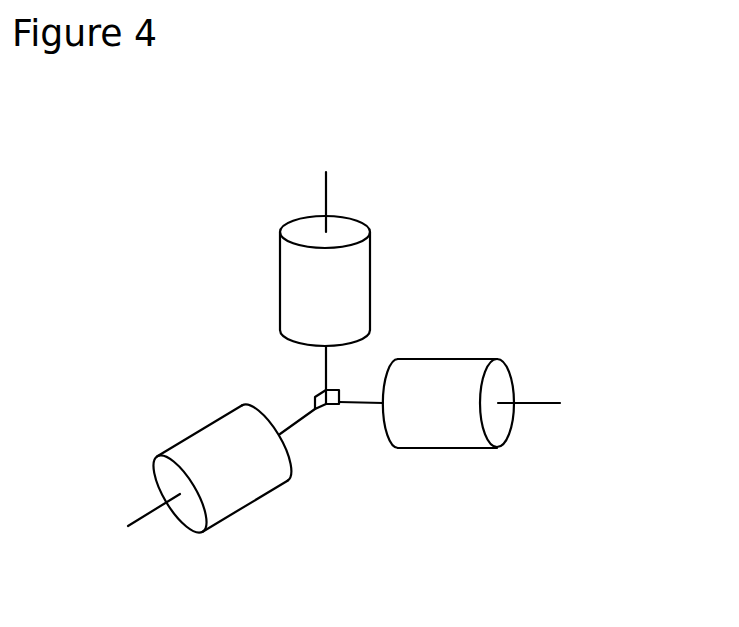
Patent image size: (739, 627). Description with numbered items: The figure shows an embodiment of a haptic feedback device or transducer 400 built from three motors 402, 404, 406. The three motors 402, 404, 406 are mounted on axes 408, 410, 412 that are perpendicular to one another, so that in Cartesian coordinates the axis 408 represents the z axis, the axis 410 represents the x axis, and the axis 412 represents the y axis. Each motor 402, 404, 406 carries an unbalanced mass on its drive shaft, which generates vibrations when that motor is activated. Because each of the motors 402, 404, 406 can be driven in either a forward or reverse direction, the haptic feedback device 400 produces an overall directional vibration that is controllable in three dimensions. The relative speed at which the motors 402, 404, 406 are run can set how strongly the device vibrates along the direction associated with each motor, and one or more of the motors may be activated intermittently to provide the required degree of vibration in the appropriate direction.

The haptic feedback device 400 is at (460, 217).
The motor 402 is at (280, 280).
The motor 404 is at (460, 359).
The motor 406 is at (190, 435).
The axis 408 is at (325, 187).
The axis 410 is at (537, 403).
The axis 412 is at (152, 513).